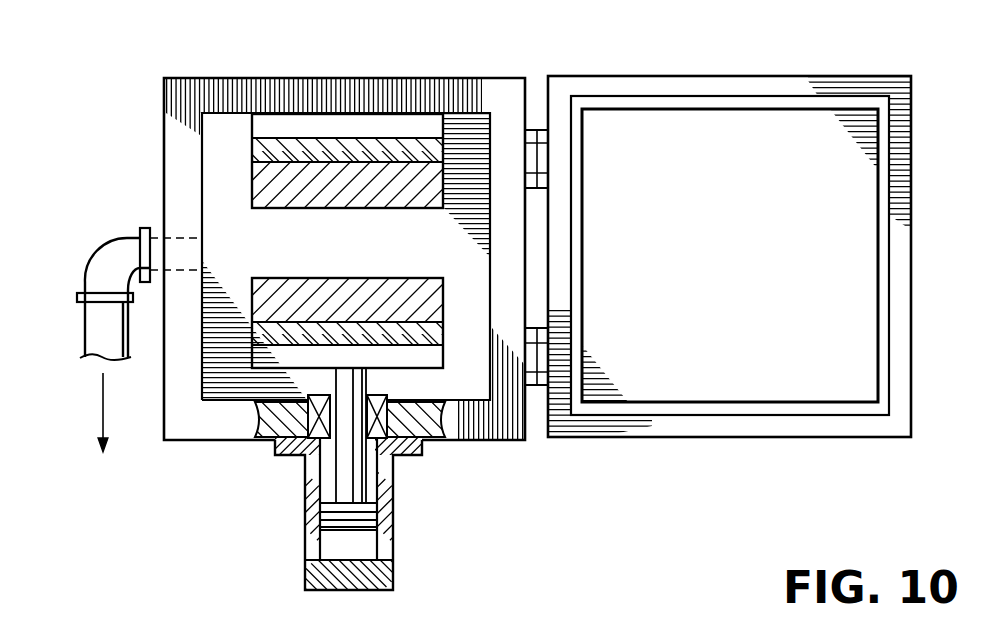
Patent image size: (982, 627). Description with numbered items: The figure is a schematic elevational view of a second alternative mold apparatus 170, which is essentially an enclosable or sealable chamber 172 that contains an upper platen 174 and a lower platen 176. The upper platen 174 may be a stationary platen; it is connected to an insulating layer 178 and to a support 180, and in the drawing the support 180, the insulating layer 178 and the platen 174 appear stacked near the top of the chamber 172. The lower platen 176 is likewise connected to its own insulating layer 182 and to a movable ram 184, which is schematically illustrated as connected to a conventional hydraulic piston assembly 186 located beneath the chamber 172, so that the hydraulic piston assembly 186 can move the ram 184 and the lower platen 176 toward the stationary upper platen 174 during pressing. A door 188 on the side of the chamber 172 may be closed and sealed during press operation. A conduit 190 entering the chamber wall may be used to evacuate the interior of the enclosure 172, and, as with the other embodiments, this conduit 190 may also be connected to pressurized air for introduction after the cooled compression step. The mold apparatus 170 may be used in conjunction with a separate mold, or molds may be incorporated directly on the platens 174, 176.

The second alternative mold apparatus 170 is at (109, 124).
The enclosable or sealable chamber 172 is at (420, 78).
The upper platen 174 is at (407, 210).
The lower platen 176 is at (314, 278).
The insulating layer 178 is at (252, 152).
The support 180 is at (308, 125).
The insulating layer 182 is at (424, 325).
The movable ram 184 is at (416, 370).
The hydraulic piston assembly 186 is at (395, 528).
The door 188 is at (733, 438).
The conduit 190 is at (109, 246).